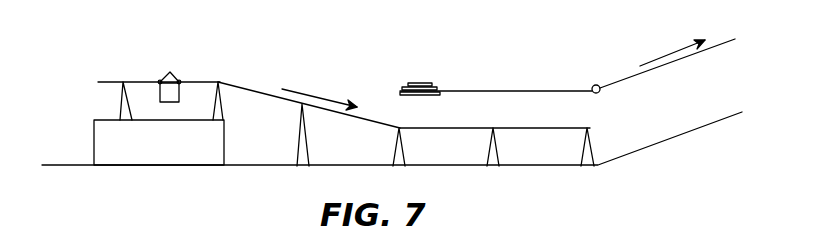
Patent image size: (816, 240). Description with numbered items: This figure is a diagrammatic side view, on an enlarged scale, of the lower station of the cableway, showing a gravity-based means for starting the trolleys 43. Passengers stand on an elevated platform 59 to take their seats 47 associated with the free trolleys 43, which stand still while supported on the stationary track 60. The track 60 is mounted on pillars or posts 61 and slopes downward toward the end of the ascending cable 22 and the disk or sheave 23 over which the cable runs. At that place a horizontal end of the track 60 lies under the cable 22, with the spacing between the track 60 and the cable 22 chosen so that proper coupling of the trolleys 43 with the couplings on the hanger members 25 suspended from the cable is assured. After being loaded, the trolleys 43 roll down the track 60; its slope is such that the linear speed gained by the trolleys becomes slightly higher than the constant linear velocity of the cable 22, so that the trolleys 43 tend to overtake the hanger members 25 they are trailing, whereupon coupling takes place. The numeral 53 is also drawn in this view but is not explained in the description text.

The ascending cable 22 is at (502, 90).
The disk or sheave 23 is at (400, 88).
The hanger members 25 is at (555, 93).
The trolleys 43 is at (173, 73).
The seats 47 is at (160, 94).
The inclined upper conveyor 53 is at (667, 63).
The elevated platform 59 is at (168, 132).
The stationary track 60 is at (263, 92).
The pillars or posts 61 is at (222, 107).